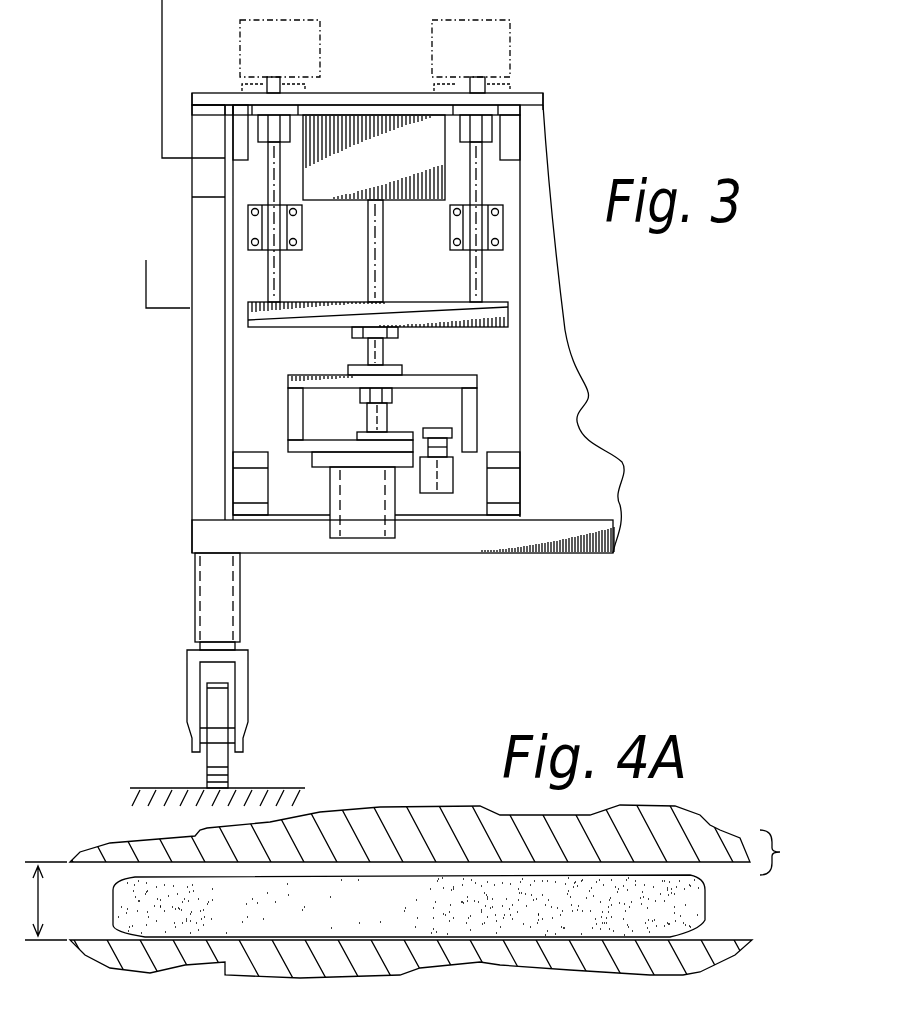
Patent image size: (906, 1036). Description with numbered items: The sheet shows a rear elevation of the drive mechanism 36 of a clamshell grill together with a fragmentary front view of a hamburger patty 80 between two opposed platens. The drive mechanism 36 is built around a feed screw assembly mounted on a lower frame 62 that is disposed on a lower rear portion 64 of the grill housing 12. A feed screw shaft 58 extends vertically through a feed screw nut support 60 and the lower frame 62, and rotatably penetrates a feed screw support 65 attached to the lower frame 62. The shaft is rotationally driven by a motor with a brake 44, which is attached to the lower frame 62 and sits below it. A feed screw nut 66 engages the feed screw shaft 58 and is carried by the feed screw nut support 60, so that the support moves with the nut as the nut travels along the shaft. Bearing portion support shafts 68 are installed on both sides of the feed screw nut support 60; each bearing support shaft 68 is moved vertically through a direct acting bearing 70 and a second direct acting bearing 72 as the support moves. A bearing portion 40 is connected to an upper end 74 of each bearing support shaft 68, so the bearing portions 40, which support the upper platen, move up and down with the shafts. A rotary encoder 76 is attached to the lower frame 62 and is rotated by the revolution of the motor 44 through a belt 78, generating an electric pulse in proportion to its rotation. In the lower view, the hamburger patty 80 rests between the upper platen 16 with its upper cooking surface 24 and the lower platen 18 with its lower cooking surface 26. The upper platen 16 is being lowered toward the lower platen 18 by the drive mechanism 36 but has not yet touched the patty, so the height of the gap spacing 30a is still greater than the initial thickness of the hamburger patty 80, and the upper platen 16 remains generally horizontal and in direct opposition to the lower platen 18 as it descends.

In FIG. 3, the housing 12 is at (223, 472).
In FIG. 3, the drive mechanism 36 is at (183, 345).
In FIG. 3, the bearing portion 40 is at (292, 58).
In FIG. 3, the upper end 74 is at (477, 82).
In FIG. 3, the second direct acting bearing 72 is at (272, 130).
In FIG. 3, the bearing portion support shaft 68 is at (270, 270).
In FIG. 3, the direct acting bearing 70 is at (263, 224).
In FIG. 3, the feed screw nut support 60 is at (483, 308).
In FIG. 3, the feed screw shaft 58 is at (388, 372).
In FIG. 3, the feed screw nut 66 is at (393, 333).
In FIG. 3, the feed screw support 65 is at (465, 383).
In FIG. 3, the lower frame 62 is at (502, 422).
In FIG. 3, the lower rear portion 64 is at (594, 471).
In FIG. 3, the motor with a brake 44 is at (366, 513).
In FIG. 3, the belt 78 is at (417, 437).
In FIG. 3, the rotary encoder 76 is at (437, 477).
In FIG. 4A, the upper platen 16 is at (150, 852).
In FIG. 4A, the lower platen 18 is at (118, 958).
In FIG. 4A, the hamburger patty 80 is at (403, 920).
In FIG. 4A, the gap spacing 30a is at (44, 901).
In FIG. 4A, the upper cooking surface 24 is at (738, 871).
In FIG. 4A, the lower cooking surface 26 is at (732, 930).